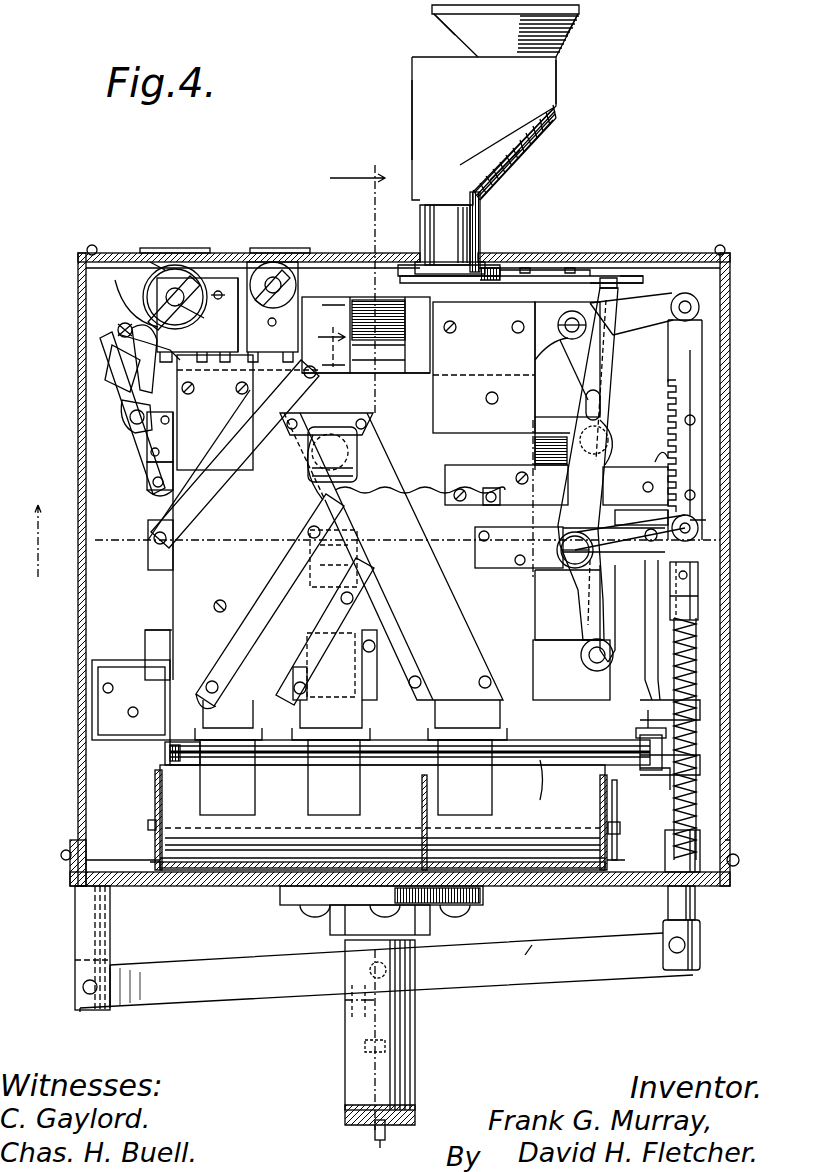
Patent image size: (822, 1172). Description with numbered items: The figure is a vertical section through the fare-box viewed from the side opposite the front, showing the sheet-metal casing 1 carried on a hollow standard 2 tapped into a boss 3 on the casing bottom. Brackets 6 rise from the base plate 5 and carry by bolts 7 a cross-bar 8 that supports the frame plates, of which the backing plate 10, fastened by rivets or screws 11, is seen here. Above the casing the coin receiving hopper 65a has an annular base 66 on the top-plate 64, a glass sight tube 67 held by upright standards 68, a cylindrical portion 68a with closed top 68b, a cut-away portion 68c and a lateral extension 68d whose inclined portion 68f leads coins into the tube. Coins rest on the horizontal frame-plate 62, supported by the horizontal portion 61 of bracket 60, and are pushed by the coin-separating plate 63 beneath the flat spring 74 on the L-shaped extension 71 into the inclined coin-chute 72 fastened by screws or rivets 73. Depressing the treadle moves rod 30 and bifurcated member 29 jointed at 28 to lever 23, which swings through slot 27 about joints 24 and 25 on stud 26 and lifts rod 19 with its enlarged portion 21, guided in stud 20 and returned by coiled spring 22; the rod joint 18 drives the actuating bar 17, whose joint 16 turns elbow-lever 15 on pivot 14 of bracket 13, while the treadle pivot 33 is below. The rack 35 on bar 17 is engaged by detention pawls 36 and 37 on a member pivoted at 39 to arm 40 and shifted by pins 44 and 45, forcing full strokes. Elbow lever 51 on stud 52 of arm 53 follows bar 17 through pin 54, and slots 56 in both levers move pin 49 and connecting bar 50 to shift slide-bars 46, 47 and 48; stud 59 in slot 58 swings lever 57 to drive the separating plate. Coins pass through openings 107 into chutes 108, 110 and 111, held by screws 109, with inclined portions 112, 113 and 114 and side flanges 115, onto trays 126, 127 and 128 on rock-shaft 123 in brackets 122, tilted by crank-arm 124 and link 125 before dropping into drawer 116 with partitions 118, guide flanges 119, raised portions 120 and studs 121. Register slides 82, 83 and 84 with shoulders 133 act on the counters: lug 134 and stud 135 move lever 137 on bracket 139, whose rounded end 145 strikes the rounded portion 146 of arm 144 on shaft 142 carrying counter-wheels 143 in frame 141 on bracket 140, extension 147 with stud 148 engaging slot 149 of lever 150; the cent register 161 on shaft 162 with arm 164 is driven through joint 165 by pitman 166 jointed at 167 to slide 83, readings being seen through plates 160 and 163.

The casing 1 is at (700, 262).
The standard 2 is at (412, 1060).
The boss 3 is at (483, 898).
The base plate 5 is at (186, 896).
The brackets 6 is at (160, 740).
The bolts 7 is at (114, 688).
The cross-bar 8 is at (145, 660).
The backing plate 10 is at (322, 332).
The rivets or screws 11 is at (488, 598).
The bracket 13 is at (556, 318).
The pivot 14 is at (558, 332).
The elbow-lever 15 is at (631, 314).
The joint 16 is at (680, 296).
The actuating bar 17 is at (705, 330).
The joint 18 is at (698, 575).
The rod 19 is at (698, 648).
The stud 20 is at (700, 838).
The enlarged portion 21 is at (696, 910).
The coiled spring 22 is at (700, 800).
The lever 23 is at (386, 972).
The joint 24 is at (686, 950).
The joint 25 is at (83, 990).
The stud 26 is at (75, 920).
The slot 27 is at (418, 1005).
The joint 28 is at (345, 972).
The bifurcated member 29 is at (430, 975).
The rod 30 is at (375, 1136).
The pivot 33 is at (655, 462).
The rack 35 is at (668, 412).
The detention pawl 36 is at (703, 444).
The detention pawl 37 is at (706, 512).
The pivot 39 is at (635, 484).
The horizontal arm 40 is at (618, 508).
The pin 44 is at (696, 420).
The pin 45 is at (696, 493).
The slide-bar 46 is at (535, 452).
The slide-bar 47 is at (556, 582).
The slide-bar 48 is at (558, 672).
The pins 49 is at (585, 440).
The connecting bar 50 is at (612, 605).
The elbow lever 51 is at (620, 580).
The stud or bearing 52 is at (522, 546).
The arm 53 is at (515, 540).
The pin 54 is at (698, 530).
The slots 56 is at (605, 436).
The lever 57 is at (604, 278).
The slot 58 is at (583, 402).
The stud 59 is at (600, 398).
The bracket 60 is at (484, 367).
The horizontal portion 61 is at (462, 325).
The horizontal frame-plate 62 is at (515, 276).
The coin-separating plate 63 is at (628, 280).
The top-plate 64 is at (545, 272).
The coin receiving hopper 65a is at (553, 108).
The annular base portion 66 is at (490, 268).
The glass sight tube 67 is at (428, 228).
The upright standards 68 is at (478, 225).
The hollow cylindrical portion 68a is at (410, 92).
The closed top 68b is at (432, 48).
The cut-away portion 68c is at (572, 34).
The lateral extension 68d is at (556, 75).
The inclined portion 68f is at (522, 152).
The L-shaped extension 71 is at (366, 335).
The inclined coin-chute 72 is at (387, 354).
The screws or rivets 73 is at (404, 318).
The flat spring 74 is at (400, 262).
The slide 82 is at (148, 440).
The slide 83 is at (150, 548).
The slide 84 is at (150, 630).
The openings 107 is at (288, 568).
The chute 108 is at (393, 556).
The screws 109 is at (346, 408).
The second chute 110 is at (270, 601).
The third chute 111 is at (335, 615).
The inclined portion 112 is at (490, 720).
The inclined portion 113 is at (240, 722).
The inclined portion 114 is at (360, 722).
The side flanges 115 is at (410, 748).
The coin receptacle or drawer 116 is at (155, 773).
The partitions 118 is at (422, 800).
The guide-flanges 119 is at (150, 858).
The raised portions 120 is at (155, 800).
The studs 121 is at (148, 824).
The brackets 122 is at (180, 770).
The rock-shaft 123 is at (524, 780).
The crank-arm 124 is at (636, 735).
The link 125 is at (698, 608).
The tray 126 is at (465, 777).
The tray 127 is at (227, 777).
The tray 128 is at (334, 777).
The shoulders 133 is at (130, 420).
The depending lug 134 is at (150, 478).
The stud 135 is at (152, 486).
The lever 137 is at (122, 405).
The bracket 139 is at (145, 430).
The bracket 140 is at (215, 412).
The counter supporting frame 141 is at (197, 320).
The shaft 142 is at (182, 304).
The counter-wheels 143 is at (190, 270).
The actuating arm 144 is at (150, 262).
The rounded end 145 is at (118, 334).
The rounded portion 146 is at (132, 345).
The plate or extension 147 is at (125, 300).
The stud 148 is at (118, 326).
The slot 149 is at (105, 372).
The lever 150 is at (100, 430).
The plate 160 is at (165, 248).
The cent registering mechanism 161 is at (244, 262).
The shaft 162 is at (274, 277).
The plate 163 is at (300, 252).
The actuating arm 164 is at (272, 312).
The joint 165 is at (345, 350).
The pitman 166 is at (192, 506).
The joint 167 is at (168, 540).